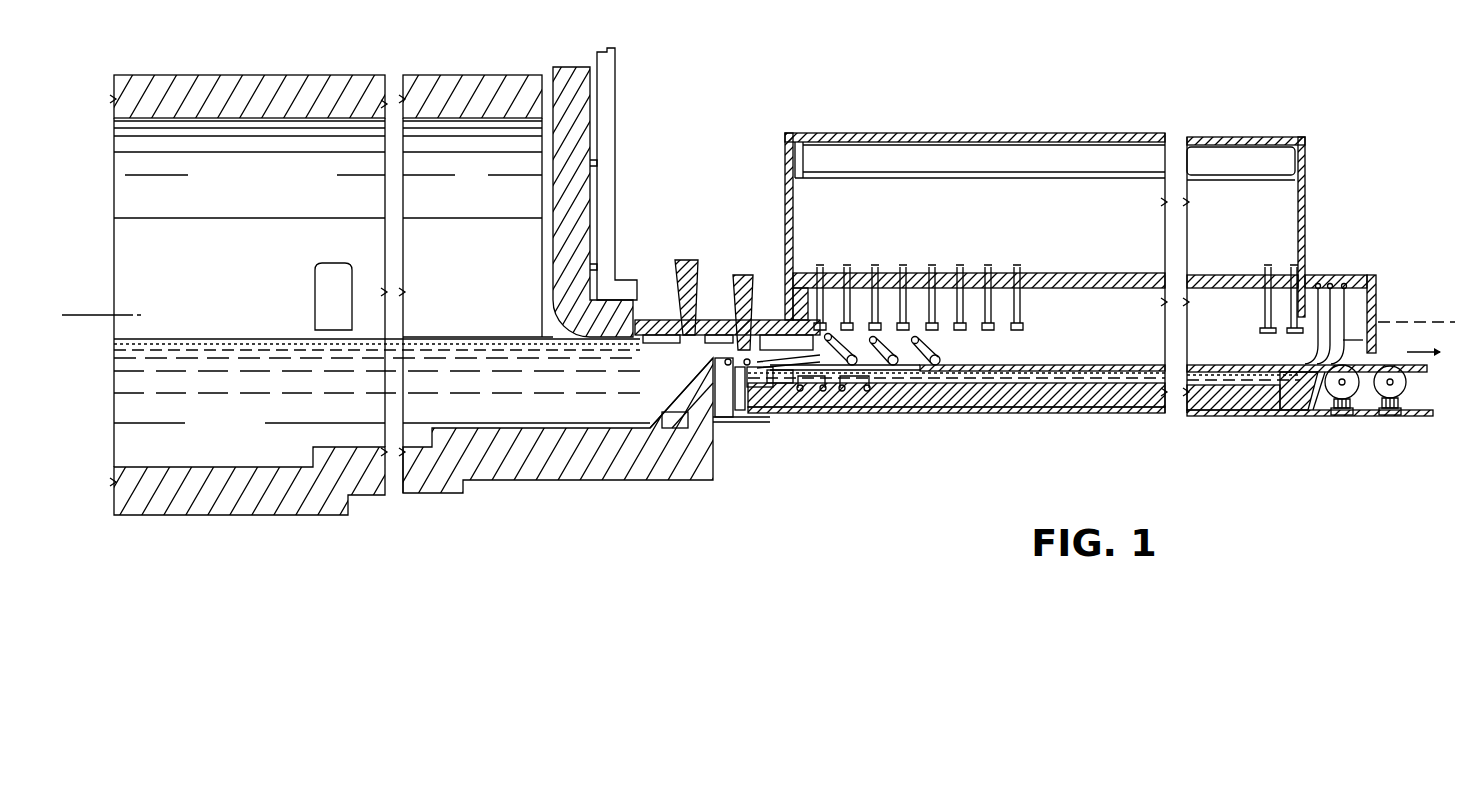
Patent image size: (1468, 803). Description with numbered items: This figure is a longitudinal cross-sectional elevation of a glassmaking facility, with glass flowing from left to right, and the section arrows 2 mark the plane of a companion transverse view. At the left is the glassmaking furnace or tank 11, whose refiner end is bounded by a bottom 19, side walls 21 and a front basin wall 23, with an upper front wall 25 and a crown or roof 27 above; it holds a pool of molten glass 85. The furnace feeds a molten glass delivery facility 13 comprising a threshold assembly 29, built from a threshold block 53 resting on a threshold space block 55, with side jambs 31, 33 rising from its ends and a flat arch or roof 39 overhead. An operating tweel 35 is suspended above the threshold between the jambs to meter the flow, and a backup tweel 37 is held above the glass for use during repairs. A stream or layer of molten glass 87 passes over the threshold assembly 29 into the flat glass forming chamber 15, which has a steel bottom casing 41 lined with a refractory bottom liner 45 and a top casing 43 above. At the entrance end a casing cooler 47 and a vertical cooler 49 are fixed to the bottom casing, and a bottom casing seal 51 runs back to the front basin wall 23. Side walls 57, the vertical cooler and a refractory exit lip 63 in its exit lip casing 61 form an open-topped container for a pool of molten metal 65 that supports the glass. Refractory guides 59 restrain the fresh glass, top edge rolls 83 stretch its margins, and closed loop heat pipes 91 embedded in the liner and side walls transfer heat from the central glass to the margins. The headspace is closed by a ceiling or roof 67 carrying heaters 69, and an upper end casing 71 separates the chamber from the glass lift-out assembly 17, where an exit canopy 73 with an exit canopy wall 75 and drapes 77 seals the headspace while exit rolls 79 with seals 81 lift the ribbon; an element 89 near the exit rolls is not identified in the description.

The section line 2- 2 is at (82, 328).
The glassmaking furnace or tank 11 is at (262, 32).
The molten glass delivery facility 13 is at (722, 93).
The flat glass forming chamber 15 is at (968, 95).
The glass lift-out assembly 17 is at (1352, 160).
The bottom 19 is at (487, 480).
The side walls 21 is at (440, 329).
The front basin wall 23 is at (672, 412).
The upper front wall 25 is at (568, 72).
The crown or roof 27 is at (485, 82).
The threshold assembly 29 is at (735, 420).
The side jamb 31 is at (663, 337).
The side jamb 33 is at (770, 337).
The operating metering member or tweel 35 is at (745, 278).
The backup tweel 37 is at (690, 262).
The flat arch or roof 39 is at (710, 320).
The bottom casing 41 is at (1053, 410).
The top casing 43 is at (880, 133).
The bottom liner 45 is at (1103, 395).
The casing cooler 47 is at (760, 390).
The vertical cooler 49 is at (752, 415).
The bottom casing seal 51 is at (725, 425).
The threshold block 53 is at (713, 360).
The threshold space block 55 is at (815, 400).
The side walls 57 is at (1097, 354).
The refractory guides 59 is at (825, 310).
The exit lip casing 61 is at (1313, 398).
The refractory exit lip 63 is at (1290, 388).
The pool of molten metal 65 is at (1208, 382).
The ceiling or roof 67 is at (1098, 273).
The heaters 69 is at (1022, 305).
The upper end casing 71 is at (1310, 290).
The exit canopy 73 is at (1348, 277).
The exit canopy wall 75 is at (1377, 310).
The drapes 77 is at (1378, 340).
The exit rolls 79 is at (1408, 385).
The seals 81 is at (1408, 411).
The top edge rolls 83 is at (940, 358).
The pool of molten glass 85 is at (222, 424).
The stream or layer of molten glass 87 is at (925, 367).
The guide strip 89 is at (1427, 368).
The closed loop heat pipes 91 is at (860, 395).